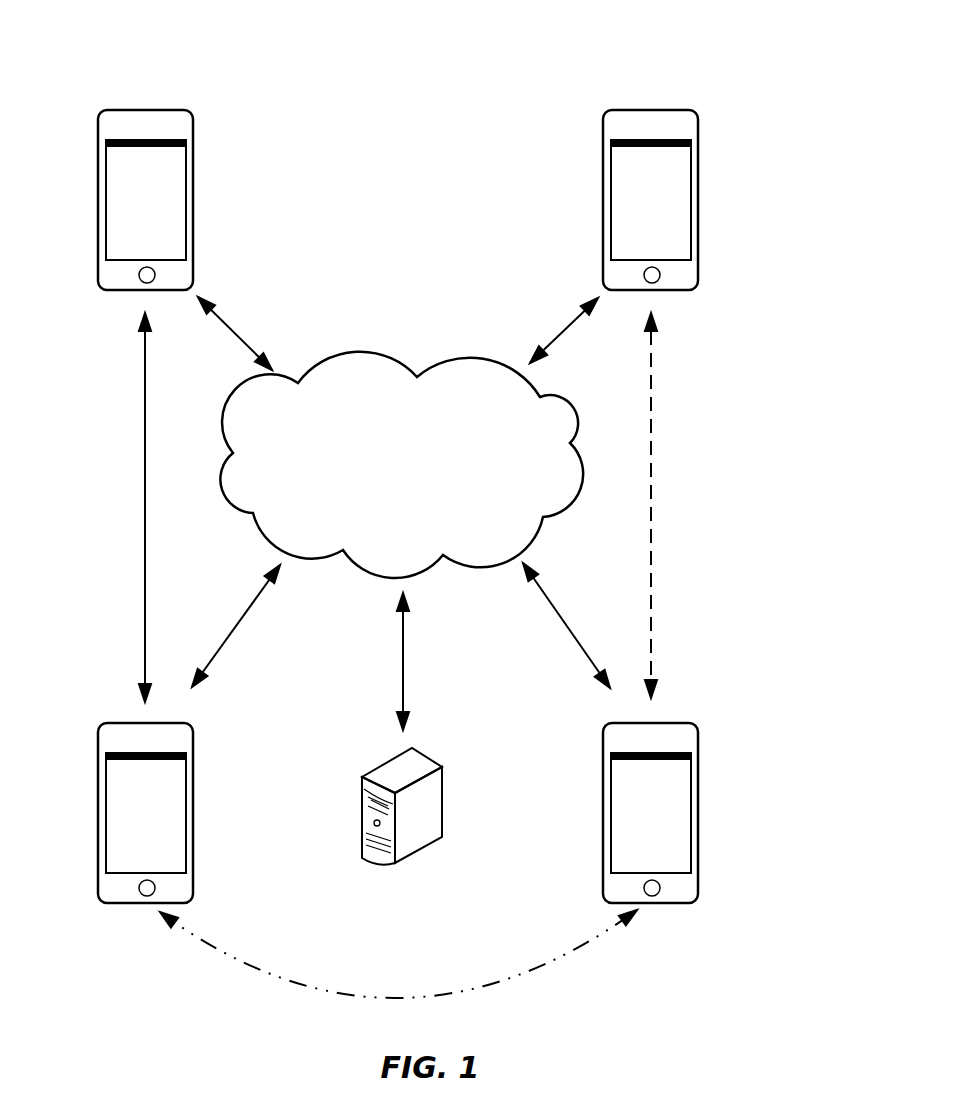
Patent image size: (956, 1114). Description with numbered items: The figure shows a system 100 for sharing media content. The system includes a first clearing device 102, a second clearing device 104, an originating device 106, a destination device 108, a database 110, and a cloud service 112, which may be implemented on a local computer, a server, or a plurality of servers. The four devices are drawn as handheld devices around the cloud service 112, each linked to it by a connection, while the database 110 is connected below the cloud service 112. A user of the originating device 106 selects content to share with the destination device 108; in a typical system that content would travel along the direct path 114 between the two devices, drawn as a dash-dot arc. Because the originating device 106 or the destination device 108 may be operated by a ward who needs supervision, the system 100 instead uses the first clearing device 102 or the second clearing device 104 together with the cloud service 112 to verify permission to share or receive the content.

The system 100 is at (720, 24).
The first clearing device 102 is at (193, 127).
The second clearing device 104 is at (698, 130).
The originating device 106 is at (193, 740).
The destination device 108 is at (698, 740).
The database 110 is at (442, 790).
The cloud service 112 is at (387, 353).
The path 114 is at (312, 988).